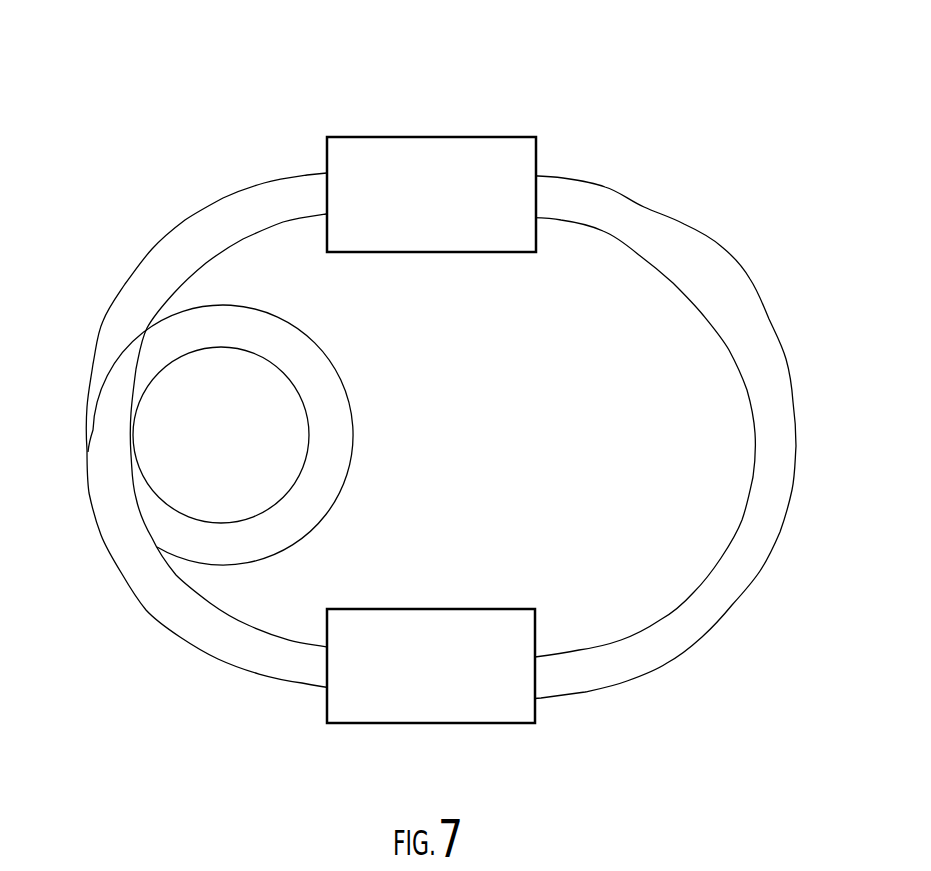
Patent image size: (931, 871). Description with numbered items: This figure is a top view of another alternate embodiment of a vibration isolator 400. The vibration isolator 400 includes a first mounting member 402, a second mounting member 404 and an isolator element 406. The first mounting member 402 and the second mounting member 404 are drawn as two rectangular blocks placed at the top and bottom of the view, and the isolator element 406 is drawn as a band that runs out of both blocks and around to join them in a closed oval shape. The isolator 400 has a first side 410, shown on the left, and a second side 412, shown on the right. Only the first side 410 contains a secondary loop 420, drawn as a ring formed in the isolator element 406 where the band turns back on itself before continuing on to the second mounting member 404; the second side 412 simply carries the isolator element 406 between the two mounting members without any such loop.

The vibration isolator 400 is at (441, 407).
The first mounting member 402 is at (495, 157).
The second mounting member 404 is at (512, 705).
The isolator element 406 is at (441, 435).
The first side 410 is at (72, 430).
The second side 412 is at (800, 330).
The secondary loop 420 is at (228, 550).